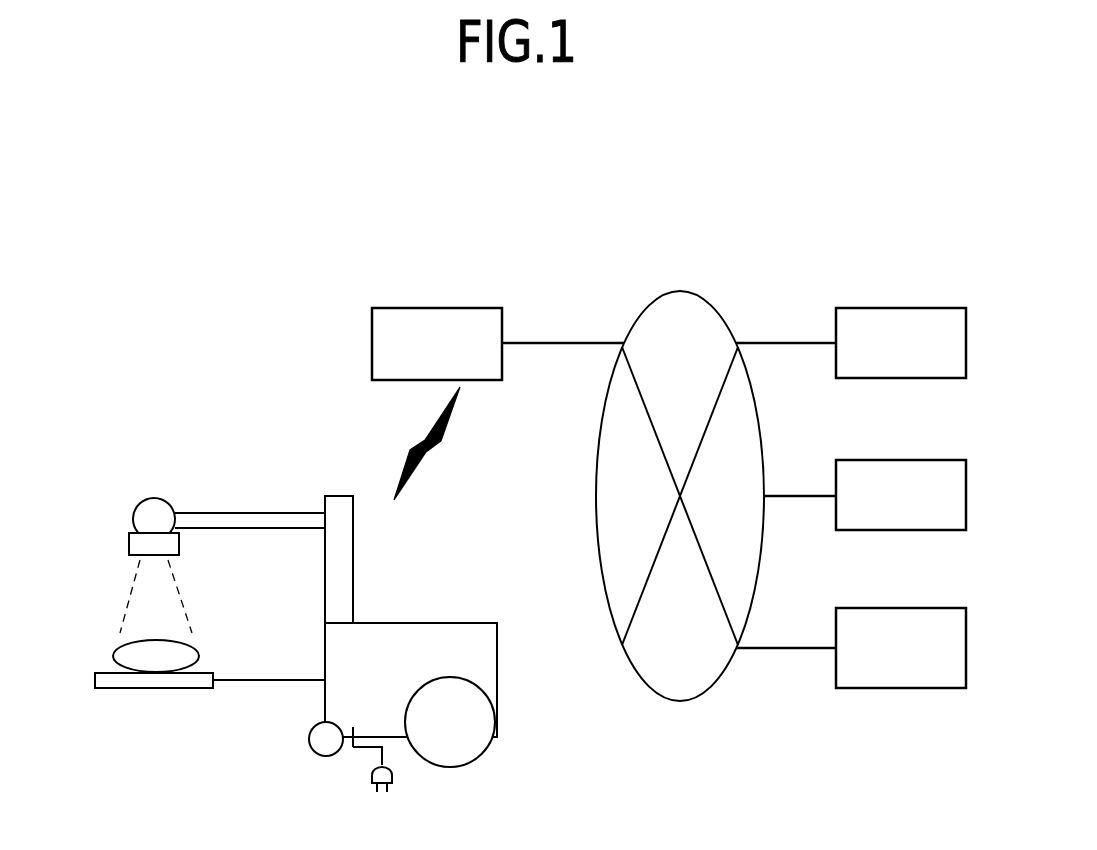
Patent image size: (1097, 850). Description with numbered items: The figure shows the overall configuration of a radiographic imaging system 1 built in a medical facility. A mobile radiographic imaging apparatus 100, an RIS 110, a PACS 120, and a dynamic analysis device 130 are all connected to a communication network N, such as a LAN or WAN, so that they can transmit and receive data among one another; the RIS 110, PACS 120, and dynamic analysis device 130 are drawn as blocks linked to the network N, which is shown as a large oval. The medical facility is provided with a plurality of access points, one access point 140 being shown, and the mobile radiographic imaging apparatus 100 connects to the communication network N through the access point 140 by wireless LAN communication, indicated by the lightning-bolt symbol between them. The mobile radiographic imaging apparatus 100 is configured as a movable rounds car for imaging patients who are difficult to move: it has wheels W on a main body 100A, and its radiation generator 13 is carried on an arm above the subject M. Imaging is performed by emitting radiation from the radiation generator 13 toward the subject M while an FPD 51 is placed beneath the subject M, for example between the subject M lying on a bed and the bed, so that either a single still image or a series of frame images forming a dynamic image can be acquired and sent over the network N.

The radiographic imaging system 1 is at (798, 185).
The radiation generator 13 is at (140, 520).
The FPD 51 is at (112, 680).
The subject M is at (190, 655).
The mobile radiographic imaging apparatus 100 is at (434, 580).
The main body 100A is at (498, 685).
The wheels W is at (463, 745).
The access point 140 is at (443, 308).
The communication network N is at (713, 308).
The RIS 110 is at (910, 308).
The PACS 120 is at (907, 460).
The dynamic analysis device 130 is at (907, 608).